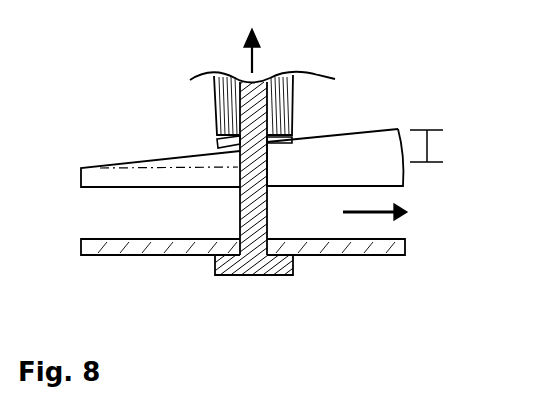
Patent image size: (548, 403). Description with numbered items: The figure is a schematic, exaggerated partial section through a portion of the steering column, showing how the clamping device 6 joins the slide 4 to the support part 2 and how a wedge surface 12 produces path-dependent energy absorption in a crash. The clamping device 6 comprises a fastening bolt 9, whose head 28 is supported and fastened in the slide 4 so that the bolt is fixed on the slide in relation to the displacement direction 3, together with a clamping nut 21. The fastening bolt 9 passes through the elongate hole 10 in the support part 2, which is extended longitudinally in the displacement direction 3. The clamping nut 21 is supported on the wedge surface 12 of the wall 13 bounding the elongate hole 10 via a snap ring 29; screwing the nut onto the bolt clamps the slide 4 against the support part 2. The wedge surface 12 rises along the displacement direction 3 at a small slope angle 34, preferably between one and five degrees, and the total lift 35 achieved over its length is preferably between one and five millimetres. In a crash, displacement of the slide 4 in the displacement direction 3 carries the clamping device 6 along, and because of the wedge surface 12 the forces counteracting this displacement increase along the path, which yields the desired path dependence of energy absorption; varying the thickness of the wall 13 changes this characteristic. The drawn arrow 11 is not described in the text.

The support part 2 is at (376, 131).
The displacement direction 3 is at (397, 220).
The slide 4 is at (340, 247).
The clamping device 6 is at (226, 279).
The fastening bolt 9 is at (248, 190).
The elongate hole 10 is at (132, 174).
The lifting direction arrow 11 is at (255, 60).
The wedge surface 12 is at (347, 132).
The wall 13 is at (390, 175).
The clamping nut 21 is at (288, 97).
The head 28 is at (267, 268).
The snap ring 29 is at (220, 140).
The slope angle 34 is at (177, 170).
The total lift 35 is at (430, 148).